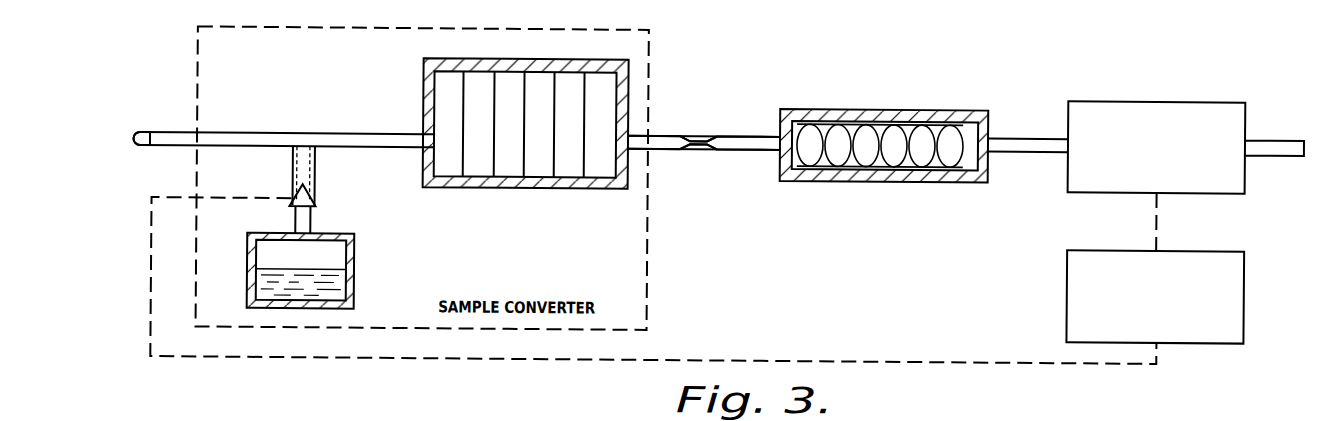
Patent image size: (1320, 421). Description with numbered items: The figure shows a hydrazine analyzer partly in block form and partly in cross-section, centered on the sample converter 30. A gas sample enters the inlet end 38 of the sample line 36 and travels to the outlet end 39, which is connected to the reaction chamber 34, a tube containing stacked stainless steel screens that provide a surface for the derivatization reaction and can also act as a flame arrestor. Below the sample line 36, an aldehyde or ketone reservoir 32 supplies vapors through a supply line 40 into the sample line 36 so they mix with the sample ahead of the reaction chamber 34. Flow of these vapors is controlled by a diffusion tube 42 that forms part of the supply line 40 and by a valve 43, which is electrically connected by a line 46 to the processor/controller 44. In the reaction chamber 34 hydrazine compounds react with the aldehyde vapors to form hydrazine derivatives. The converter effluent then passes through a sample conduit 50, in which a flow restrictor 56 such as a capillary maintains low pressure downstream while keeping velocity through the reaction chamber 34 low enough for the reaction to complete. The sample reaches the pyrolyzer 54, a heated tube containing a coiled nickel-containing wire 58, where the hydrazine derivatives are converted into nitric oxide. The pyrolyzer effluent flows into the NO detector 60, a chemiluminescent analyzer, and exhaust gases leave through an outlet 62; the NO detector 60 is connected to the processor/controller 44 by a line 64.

The sample converter 30 is at (648, 306).
The aldehyde or ketone reservoir 32 is at (355, 263).
The reaction chamber 34 is at (423, 66).
The sample line 36 is at (232, 134).
The inlet end 38 is at (136, 134).
The outlet end 39 is at (423, 128).
The supply line 40 is at (296, 219).
The diffusion tube 42 is at (310, 152).
The valve 43 is at (316, 206).
The processor/controller 44 is at (1068, 291).
The line 46 is at (872, 358).
The sample conduit 50 is at (731, 134).
The pyrolyzer 54 is at (882, 112).
The flow restrictor 56 is at (700, 147).
The coiled nickel-containing wire 58 is at (886, 160).
The NO detector 60 is at (1157, 96).
The outlet 62 is at (1277, 134).
The line 64 is at (1160, 217).